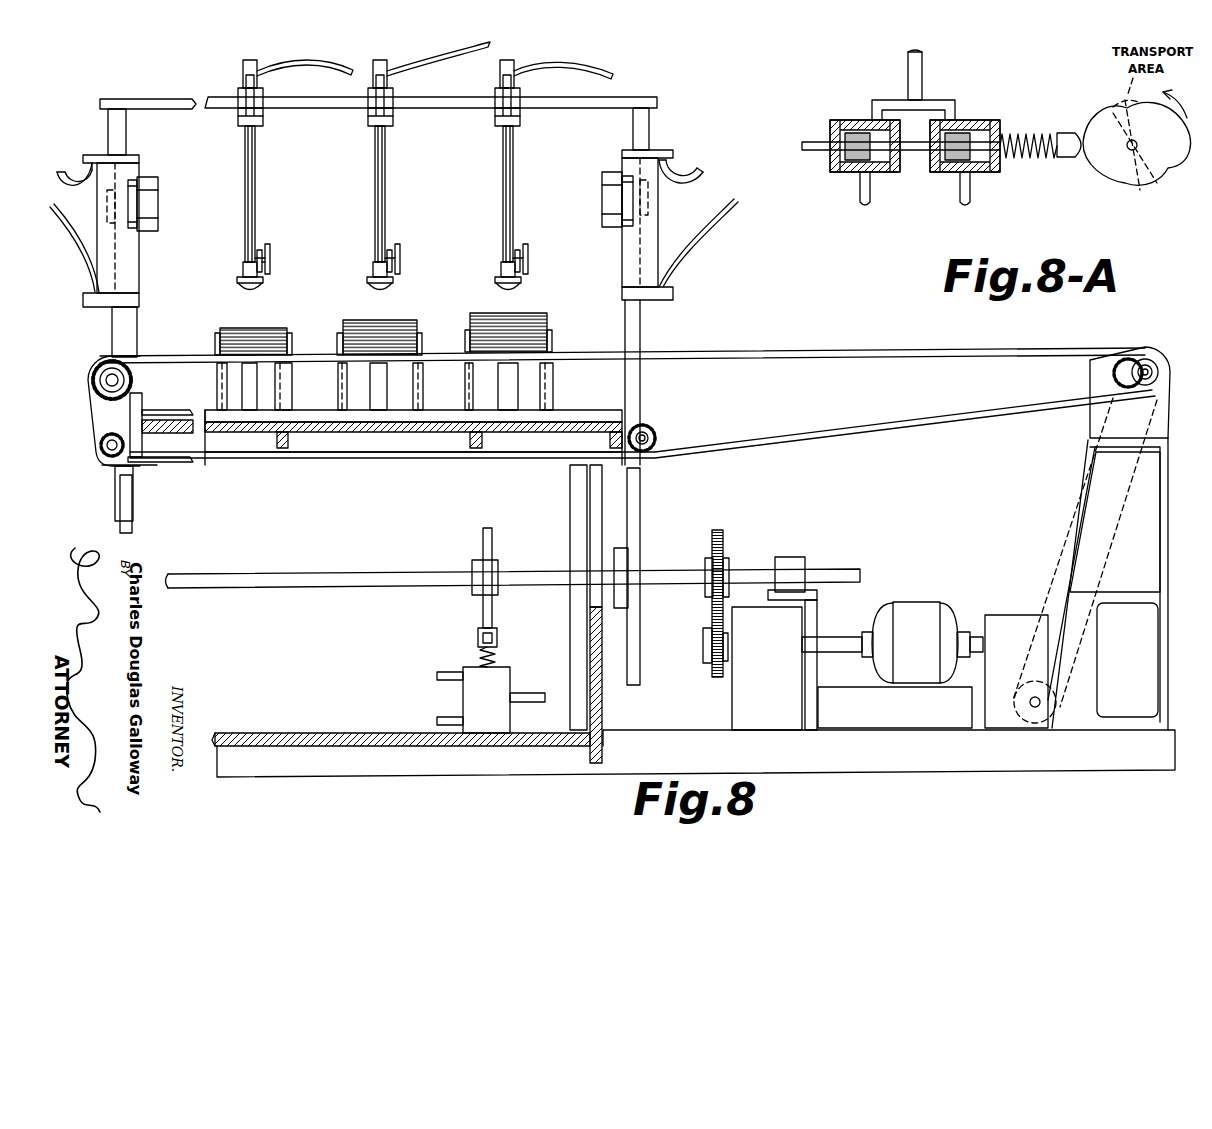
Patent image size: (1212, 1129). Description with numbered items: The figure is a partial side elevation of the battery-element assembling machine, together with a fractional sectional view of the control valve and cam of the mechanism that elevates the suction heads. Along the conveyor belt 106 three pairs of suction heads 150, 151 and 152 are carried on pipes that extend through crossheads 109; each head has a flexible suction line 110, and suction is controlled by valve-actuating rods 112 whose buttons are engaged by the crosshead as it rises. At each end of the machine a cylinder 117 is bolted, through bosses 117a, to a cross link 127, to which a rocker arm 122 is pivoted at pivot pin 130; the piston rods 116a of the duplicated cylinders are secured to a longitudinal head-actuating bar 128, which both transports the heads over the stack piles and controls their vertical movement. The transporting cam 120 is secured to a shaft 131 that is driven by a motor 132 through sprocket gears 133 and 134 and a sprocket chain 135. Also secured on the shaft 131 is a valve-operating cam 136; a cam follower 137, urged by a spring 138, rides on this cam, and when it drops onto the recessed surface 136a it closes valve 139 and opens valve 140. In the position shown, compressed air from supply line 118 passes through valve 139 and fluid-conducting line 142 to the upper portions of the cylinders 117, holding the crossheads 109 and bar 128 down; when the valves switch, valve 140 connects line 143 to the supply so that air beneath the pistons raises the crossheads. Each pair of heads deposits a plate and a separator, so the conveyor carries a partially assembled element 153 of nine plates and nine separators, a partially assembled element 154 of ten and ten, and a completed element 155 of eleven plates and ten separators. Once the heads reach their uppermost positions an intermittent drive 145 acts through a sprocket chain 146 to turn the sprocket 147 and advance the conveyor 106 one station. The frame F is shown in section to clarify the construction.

In FIG. 8, the conveyor belt 106 is at (827, 350).
In FIG. 8, the crosshead 109 is at (237, 123).
In FIG. 8, the flexible suction line 110 is at (307, 58).
In FIG. 8, the valve-actuating rod 112 is at (252, 197).
In FIG. 8, the piston rod 116a is at (110, 127).
In FIG. 8, the cylinder 117 is at (133, 281).
In FIG. 8, the boss 117a is at (132, 210).
In FIG. 8, the supply line 118 is at (527, 693).
In FIG. 8-A, the supply line 118 is at (922, 75).
In FIG. 8, the transporting cam 120 is at (130, 530).
In FIG. 8, the rocker arm 122 is at (133, 337).
In FIG. 8, the cross member 127 is at (152, 182).
In FIG. 8, the head-actuating bar 128 is at (332, 105).
In FIG. 8, the pivot pin 130 is at (150, 199).
In FIG. 8, the shaft 131 is at (357, 587).
In FIG. 8, the motor 132 is at (918, 603).
In FIG. 8, the sprocket gear 133 is at (708, 658).
In FIG. 8, the sprocket gear 134 is at (723, 560).
In FIG. 8, the sprocket chain 135 is at (712, 607).
In FIG. 8, the valve-operating cam 136 is at (485, 550).
In FIG. 8-A, the valve-operating cam 136 is at (1157, 163).
In FIG. 8-A, the recessed surface 136a is at (1102, 120).
In FIG. 8, the cam follower 137 is at (480, 630).
In FIG. 8-A, the cam follower 137 is at (1075, 148).
In FIG. 8, the spring 138 is at (495, 658).
In FIG. 8-A, the spring 138 is at (1013, 132).
In FIG. 8-A, the valve 139 is at (840, 173).
In FIG. 8-A, the valve 140 is at (990, 172).
In FIG. 8, the fluid-conducting line 142 is at (73, 178).
In FIG. 8-A, the fluid-conducting line 142 is at (868, 193).
In FIG. 8, the supply line 143 is at (85, 258).
In FIG. 8-A, the supply line 143 is at (965, 197).
In FIG. 8, the intermittent drive 145 is at (1002, 622).
In FIG. 8, the sprocket chain 146 is at (1082, 663).
In FIG. 8, the sprocket 147 is at (1145, 358).
In FIG. 8, the pair of suction heads 150 is at (252, 287).
In FIG. 8, the pair of suction heads 151 is at (382, 285).
In FIG. 8, the pair of suction heads 152 is at (512, 283).
In FIG. 8, the partially assembled element 153 is at (242, 333).
In FIG. 8, the partially assembled element 154 is at (363, 323).
In FIG. 8, the completed element 155 is at (487, 318).
In FIG. 8, the frame F is at (310, 432).